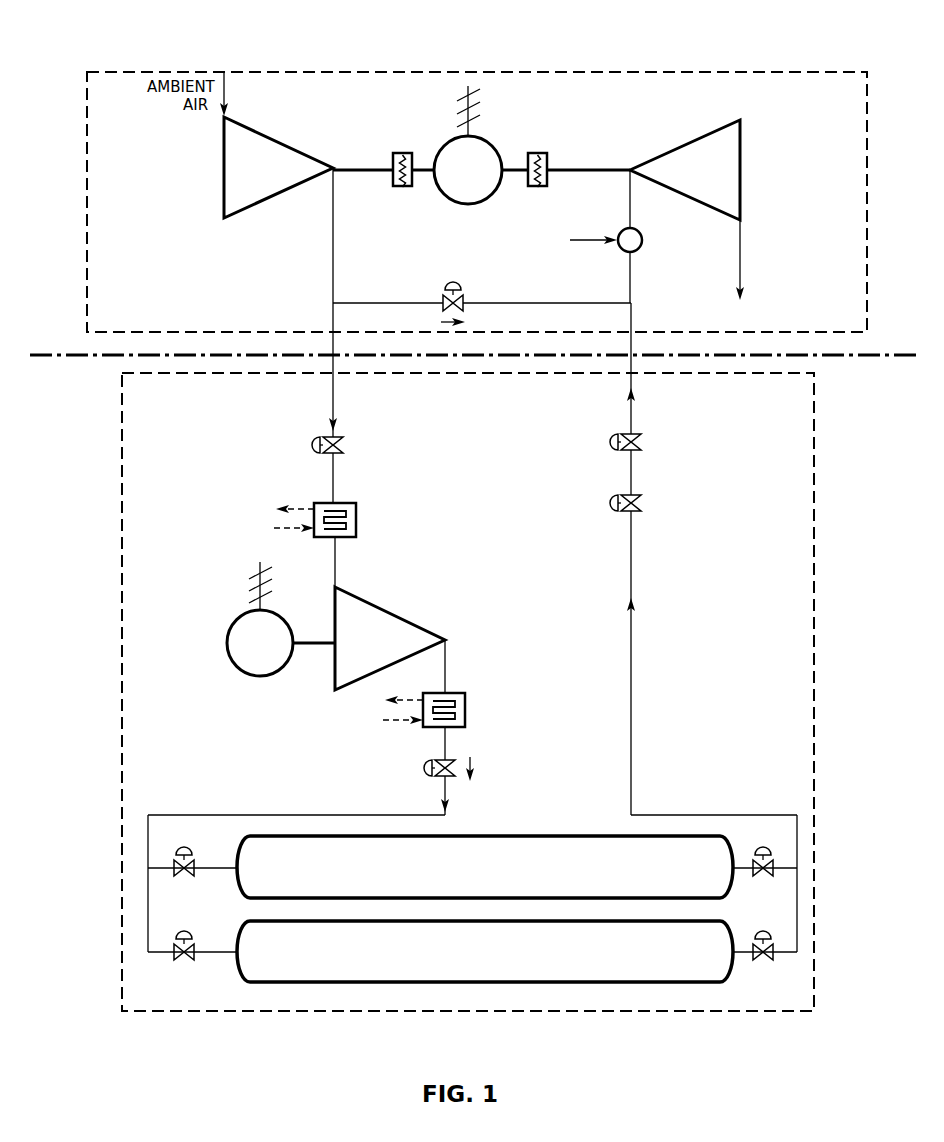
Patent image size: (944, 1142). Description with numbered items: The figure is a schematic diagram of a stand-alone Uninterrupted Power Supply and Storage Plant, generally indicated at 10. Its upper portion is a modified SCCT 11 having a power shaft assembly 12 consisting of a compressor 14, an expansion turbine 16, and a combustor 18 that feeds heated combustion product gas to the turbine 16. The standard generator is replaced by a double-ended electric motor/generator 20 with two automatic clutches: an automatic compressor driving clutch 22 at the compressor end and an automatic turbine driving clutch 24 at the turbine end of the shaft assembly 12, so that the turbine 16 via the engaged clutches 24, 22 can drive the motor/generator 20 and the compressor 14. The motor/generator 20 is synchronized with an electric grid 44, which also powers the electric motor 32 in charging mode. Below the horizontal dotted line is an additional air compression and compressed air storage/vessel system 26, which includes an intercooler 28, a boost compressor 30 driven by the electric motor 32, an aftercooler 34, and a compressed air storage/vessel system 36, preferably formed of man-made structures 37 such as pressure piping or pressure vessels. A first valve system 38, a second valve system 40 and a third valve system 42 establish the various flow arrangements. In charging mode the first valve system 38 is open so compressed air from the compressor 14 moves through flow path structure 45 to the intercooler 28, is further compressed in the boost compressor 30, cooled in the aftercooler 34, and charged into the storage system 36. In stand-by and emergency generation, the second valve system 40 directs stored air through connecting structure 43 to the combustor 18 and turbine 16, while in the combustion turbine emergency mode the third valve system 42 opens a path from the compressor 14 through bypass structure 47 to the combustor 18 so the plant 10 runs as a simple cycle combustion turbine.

The Uninterrupted Power Supply and Storage Plant 10 is at (730, 48).
The modified SCCT 11 is at (870, 254).
The power shaft assembly 12 is at (585, 168).
The compressor 14 is at (232, 175).
The expansion turbine 16 is at (735, 177).
The combustor 18 is at (643, 233).
The double-ended electric motor/generator 20 is at (450, 199).
The automatic compressor driving clutch 22 is at (392, 157).
The automatic turbine driving clutch 24 is at (543, 152).
The air compression and compressed air storage/vessel system 26 is at (818, 667).
The intercooler 28 is at (357, 513).
The boost compressor 30 is at (392, 614).
The electric motor 32 is at (227, 630).
The aftercooler 34 is at (468, 703).
The compressed air storage/vessel system 36 is at (472, 930).
The man-made structures 37 is at (516, 879).
The first valve system 38 is at (338, 438).
The second valve system 40 is at (634, 435).
The third valve system 42 is at (463, 290).
The connecting structure 43 is at (634, 658).
The electric grid 44 is at (483, 104).
The flow path structure 45 is at (333, 487).
The bypass structure 47 is at (418, 302).